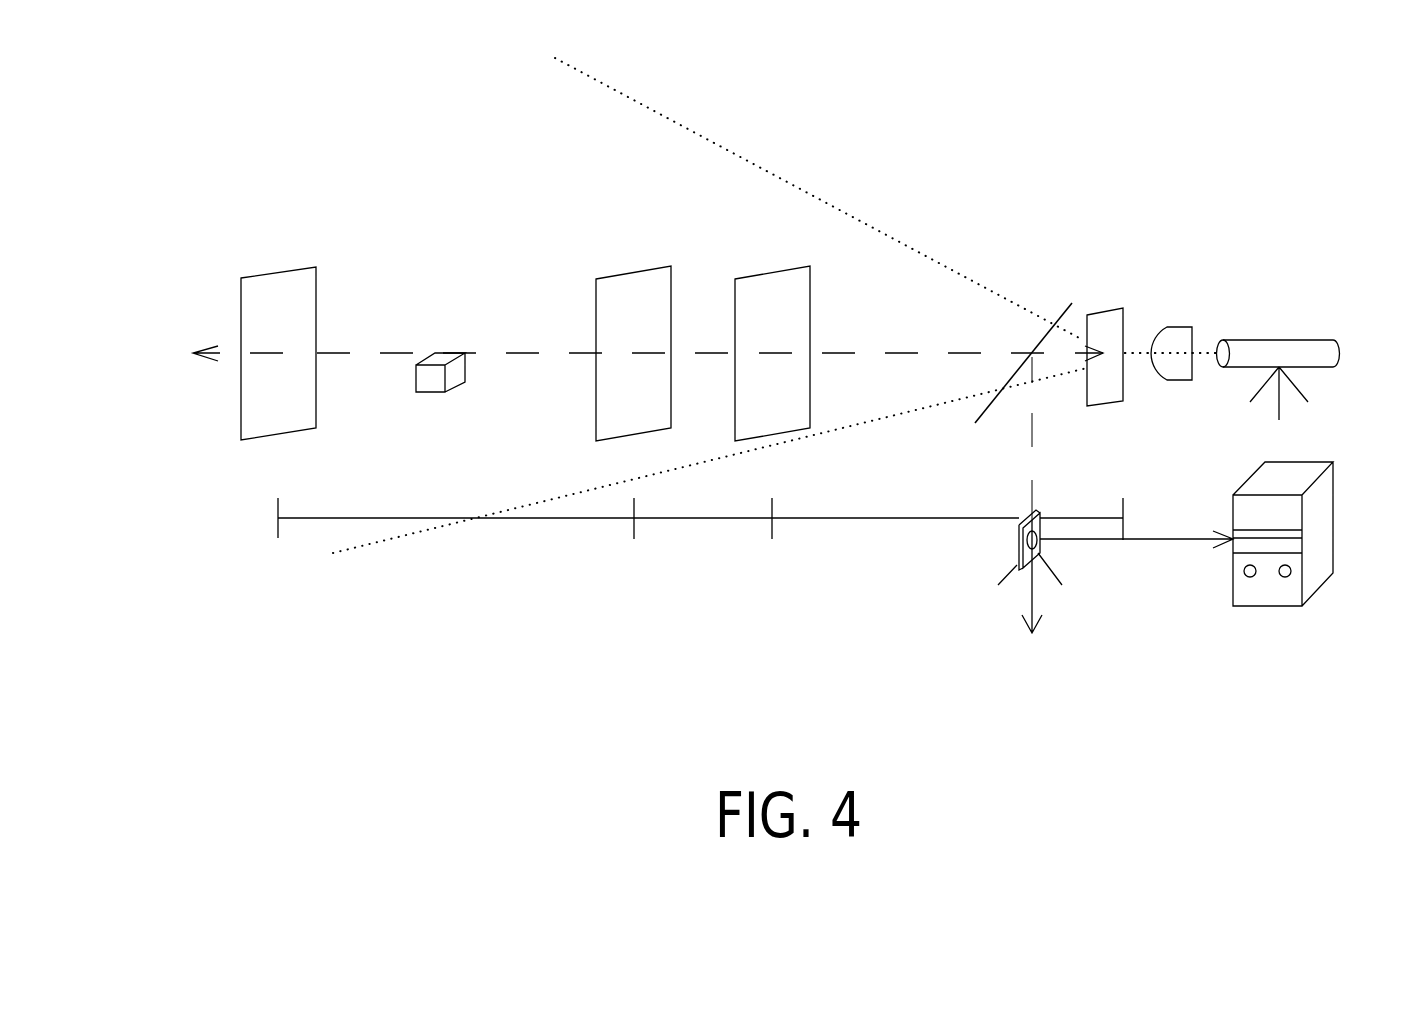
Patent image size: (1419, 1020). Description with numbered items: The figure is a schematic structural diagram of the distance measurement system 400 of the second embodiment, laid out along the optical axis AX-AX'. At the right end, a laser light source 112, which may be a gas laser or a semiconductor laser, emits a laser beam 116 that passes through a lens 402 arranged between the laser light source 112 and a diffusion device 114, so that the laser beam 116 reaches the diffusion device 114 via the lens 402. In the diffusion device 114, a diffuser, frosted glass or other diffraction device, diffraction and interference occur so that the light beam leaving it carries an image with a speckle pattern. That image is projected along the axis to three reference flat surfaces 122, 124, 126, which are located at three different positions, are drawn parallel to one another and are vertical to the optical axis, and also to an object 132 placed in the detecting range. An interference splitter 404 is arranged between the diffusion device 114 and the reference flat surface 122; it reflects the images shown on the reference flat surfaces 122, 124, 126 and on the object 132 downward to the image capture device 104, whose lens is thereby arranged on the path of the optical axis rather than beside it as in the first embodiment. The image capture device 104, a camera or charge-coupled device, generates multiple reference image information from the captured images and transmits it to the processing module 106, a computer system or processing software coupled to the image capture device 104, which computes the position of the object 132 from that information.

The distance measurement system 400 is at (197, 166).
The reference flat surface 126 is at (282, 272).
The object 132 is at (430, 393).
The reference flat surface 124 is at (636, 270).
The reference flat surface 122 is at (775, 270).
The interference splitter 404 is at (1060, 312).
The diffusion device 114 is at (1105, 310).
The lens 402 is at (1177, 328).
The laser beam 116 is at (1202, 350).
The laser light source 112 is at (1303, 342).
The image capture device 104 is at (1058, 498).
The processing module 106 is at (1327, 522).